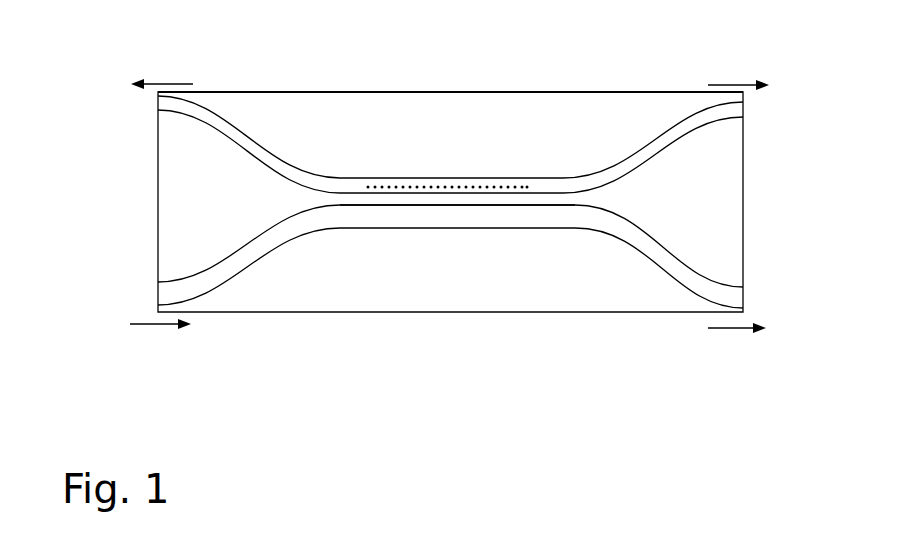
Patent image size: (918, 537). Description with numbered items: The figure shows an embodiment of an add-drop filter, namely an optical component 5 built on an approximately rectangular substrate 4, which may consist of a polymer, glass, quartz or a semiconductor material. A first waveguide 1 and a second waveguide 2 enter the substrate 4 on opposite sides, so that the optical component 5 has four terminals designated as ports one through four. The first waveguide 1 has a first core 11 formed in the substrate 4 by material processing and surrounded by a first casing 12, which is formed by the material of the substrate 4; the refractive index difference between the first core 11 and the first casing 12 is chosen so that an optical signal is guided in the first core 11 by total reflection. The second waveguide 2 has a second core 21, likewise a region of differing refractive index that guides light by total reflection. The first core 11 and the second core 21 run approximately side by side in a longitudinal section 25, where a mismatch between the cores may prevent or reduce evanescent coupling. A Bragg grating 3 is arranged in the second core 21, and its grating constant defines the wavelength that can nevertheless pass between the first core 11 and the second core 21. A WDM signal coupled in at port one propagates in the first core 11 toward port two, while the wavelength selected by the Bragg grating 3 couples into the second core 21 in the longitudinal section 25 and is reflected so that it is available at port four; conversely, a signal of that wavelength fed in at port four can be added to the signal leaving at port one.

The first waveguide 1 is at (450, 291).
The second waveguide 2 is at (450, 119).
The Bragg grating 3 is at (486, 188).
The substrate 4 is at (368, 106).
The optical component 5 is at (120, 202).
The first core 11 is at (513, 225).
The first casing 12 is at (572, 237).
The second core 21 is at (245, 140).
The longitudinal section 25 is at (400, 200).